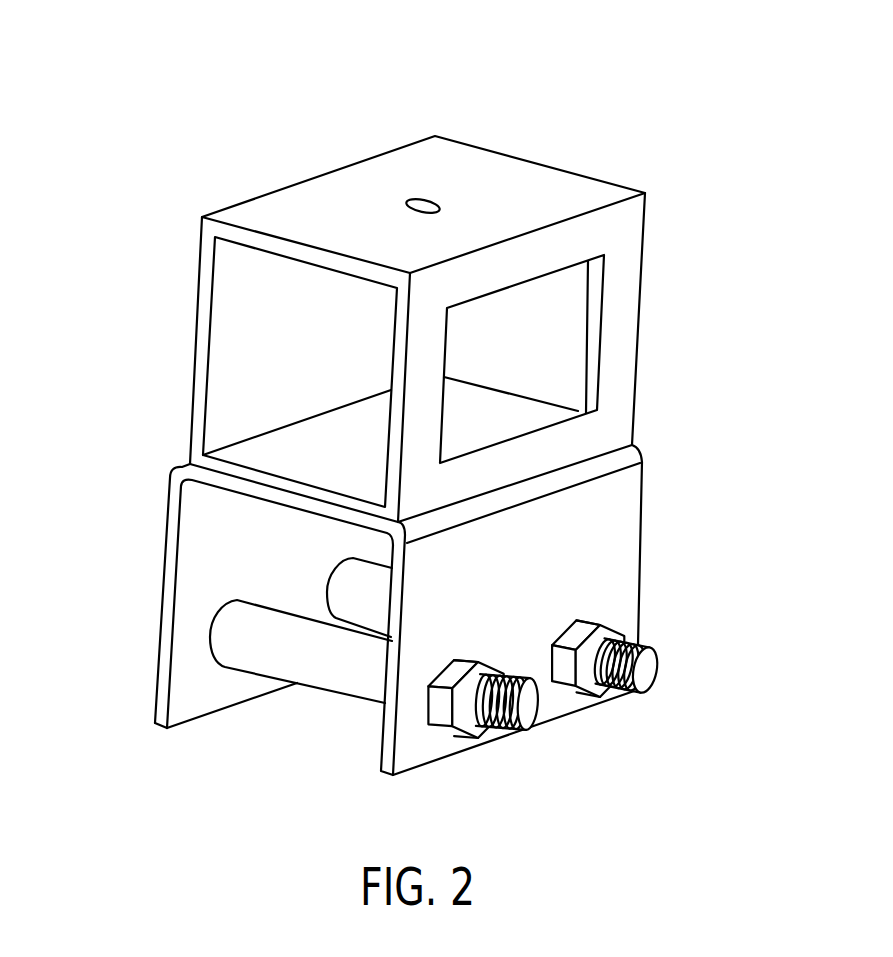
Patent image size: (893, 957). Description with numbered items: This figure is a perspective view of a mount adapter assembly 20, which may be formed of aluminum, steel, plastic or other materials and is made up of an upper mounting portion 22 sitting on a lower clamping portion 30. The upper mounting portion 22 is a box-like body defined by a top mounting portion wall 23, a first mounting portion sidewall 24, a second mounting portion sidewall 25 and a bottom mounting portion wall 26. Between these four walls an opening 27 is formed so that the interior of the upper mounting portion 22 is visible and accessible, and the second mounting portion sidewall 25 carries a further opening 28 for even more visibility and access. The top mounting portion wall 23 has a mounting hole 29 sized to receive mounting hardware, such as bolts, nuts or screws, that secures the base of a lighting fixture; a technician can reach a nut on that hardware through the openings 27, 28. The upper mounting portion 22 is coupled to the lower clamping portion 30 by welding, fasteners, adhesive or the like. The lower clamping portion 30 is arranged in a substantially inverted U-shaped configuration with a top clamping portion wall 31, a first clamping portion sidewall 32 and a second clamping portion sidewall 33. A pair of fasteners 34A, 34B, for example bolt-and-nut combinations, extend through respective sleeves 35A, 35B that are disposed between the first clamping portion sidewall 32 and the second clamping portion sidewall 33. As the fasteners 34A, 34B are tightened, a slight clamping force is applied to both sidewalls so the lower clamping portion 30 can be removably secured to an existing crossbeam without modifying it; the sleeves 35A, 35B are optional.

The mount adapter assembly 20 is at (141, 83).
The upper mounting portion 22 is at (662, 191).
The top mounting portion wall 23 is at (542, 182).
The first mounting portion sidewall 24 is at (212, 276).
The second mounting portion sidewall 25 is at (622, 397).
The bottom mounting portion wall 26 is at (268, 450).
The opening 27 is at (214, 400).
The opening 28 is at (605, 306).
The mounting hole 29 is at (417, 202).
The lower clamping portion 30 is at (656, 529).
The top clamping portion wall 31 is at (295, 506).
The first clamping portion sidewall 32 is at (200, 573).
The second clamping portion sidewall 33 is at (605, 590).
The fastener 34A is at (527, 708).
The fastener 34B is at (655, 675).
The sleeve 35A is at (308, 674).
The sleeve 35B is at (380, 616).